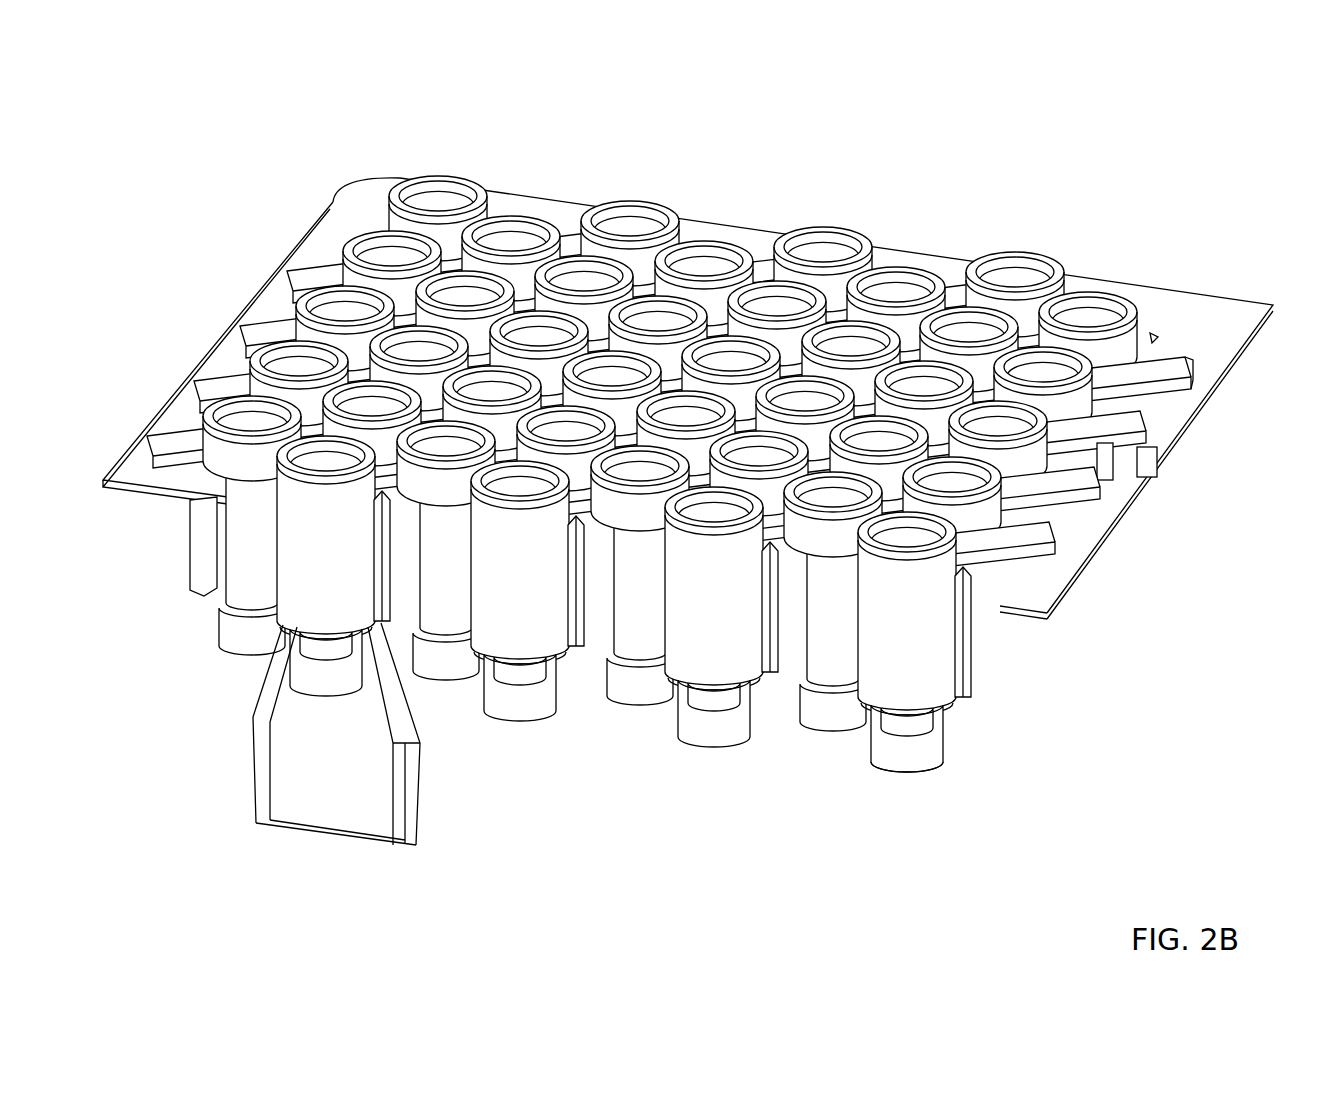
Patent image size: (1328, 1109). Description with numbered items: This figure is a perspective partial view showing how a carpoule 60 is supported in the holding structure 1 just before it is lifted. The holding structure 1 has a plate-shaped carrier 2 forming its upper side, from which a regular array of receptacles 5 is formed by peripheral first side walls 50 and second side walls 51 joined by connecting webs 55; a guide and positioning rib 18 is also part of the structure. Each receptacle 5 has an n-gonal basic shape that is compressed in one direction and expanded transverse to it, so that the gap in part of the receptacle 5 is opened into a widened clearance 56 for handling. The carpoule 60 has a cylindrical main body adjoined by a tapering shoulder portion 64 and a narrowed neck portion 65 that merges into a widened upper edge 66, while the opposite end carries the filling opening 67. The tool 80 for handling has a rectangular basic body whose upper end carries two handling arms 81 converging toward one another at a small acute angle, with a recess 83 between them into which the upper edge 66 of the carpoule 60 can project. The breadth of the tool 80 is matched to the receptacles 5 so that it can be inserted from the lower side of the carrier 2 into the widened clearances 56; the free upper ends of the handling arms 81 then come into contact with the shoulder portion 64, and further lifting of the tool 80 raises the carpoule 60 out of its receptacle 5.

The holding structure 1 is at (130, 128).
The plate-shaped carrier 2 is at (1220, 352).
The receptacle 5 is at (322, 268).
The guide and positioning rib 18 is at (967, 650).
The first side wall 50 is at (1158, 335).
The second side wall 51 is at (1153, 378).
The connecting web 55 is at (1190, 370).
The widened clearance for handling 56 is at (1027, 508).
The carpoule 60 is at (669, 683).
The shoulder portion 64 is at (929, 766).
The narrowed neck portion 65 is at (897, 718).
The upper edge 66 is at (912, 748).
The filling opening 67 is at (632, 220).
The tool for handling 80 is at (294, 775).
The handling arm 81 is at (262, 713).
The recess 83 is at (356, 688).